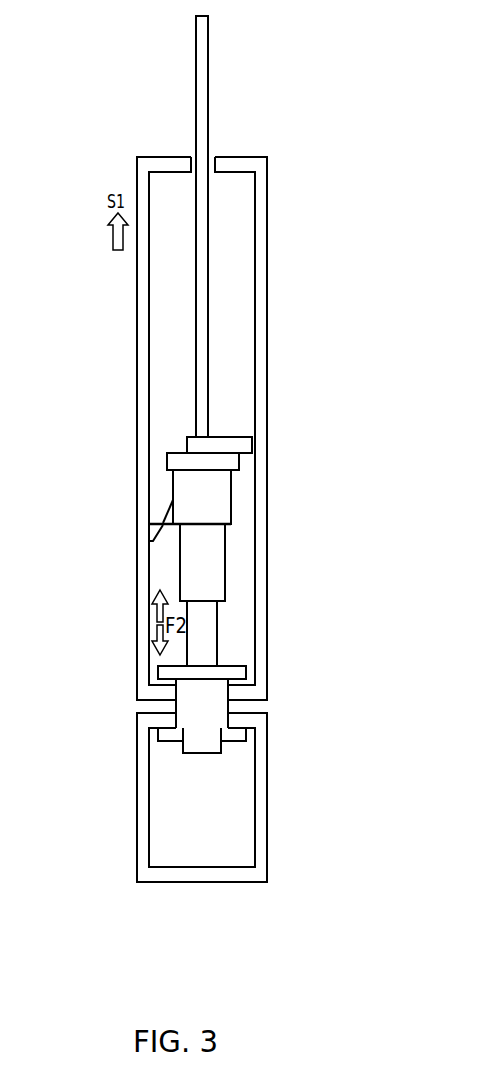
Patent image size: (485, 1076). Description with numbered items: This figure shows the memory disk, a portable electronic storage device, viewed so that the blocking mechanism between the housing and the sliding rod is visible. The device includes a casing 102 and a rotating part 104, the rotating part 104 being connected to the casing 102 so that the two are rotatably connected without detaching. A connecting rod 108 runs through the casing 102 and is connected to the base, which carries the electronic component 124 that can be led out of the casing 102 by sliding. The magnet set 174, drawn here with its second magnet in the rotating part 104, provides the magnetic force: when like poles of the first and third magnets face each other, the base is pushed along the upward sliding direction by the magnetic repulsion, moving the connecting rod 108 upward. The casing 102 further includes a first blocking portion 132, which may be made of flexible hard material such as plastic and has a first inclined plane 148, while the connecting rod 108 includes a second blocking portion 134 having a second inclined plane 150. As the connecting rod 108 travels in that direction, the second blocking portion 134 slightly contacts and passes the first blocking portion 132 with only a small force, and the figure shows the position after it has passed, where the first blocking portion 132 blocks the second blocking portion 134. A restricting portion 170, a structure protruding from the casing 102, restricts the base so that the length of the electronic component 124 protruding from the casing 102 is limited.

The casing 102 is at (264, 245).
The rotating part 104 is at (262, 793).
The connecting rod 108 is at (210, 632).
The electronic component 124 is at (203, 218).
The first blocking portion 132 is at (167, 507).
The second blocking portion 134 is at (158, 512).
The first inclined plane 148 is at (165, 535).
The second inclined plane 150 is at (125, 498).
The restricting portion 170 is at (252, 447).
The magnet set 174 is at (217, 750).